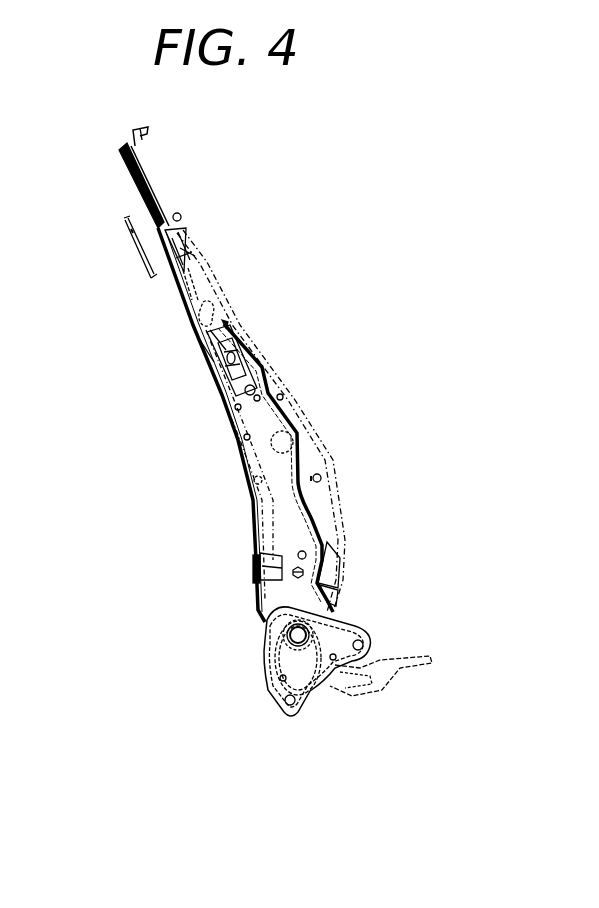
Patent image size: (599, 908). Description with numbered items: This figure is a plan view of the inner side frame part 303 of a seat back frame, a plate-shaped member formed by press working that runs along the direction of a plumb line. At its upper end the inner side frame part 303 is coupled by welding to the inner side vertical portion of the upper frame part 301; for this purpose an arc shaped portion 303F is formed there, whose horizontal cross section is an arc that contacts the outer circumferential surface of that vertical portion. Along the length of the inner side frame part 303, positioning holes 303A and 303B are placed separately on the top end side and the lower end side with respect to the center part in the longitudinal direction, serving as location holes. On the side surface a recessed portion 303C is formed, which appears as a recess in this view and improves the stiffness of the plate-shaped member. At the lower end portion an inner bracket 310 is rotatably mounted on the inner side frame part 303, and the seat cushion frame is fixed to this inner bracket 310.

The upper frame part 301 is at (160, 185).
The inner side frame part 303 is at (320, 432).
The positioning hole 303A is at (247, 393).
The positioning hole 303B is at (298, 556).
The recessed portion 303C is at (297, 512).
The arc shaped portion 303F is at (190, 247).
The inner bracket 310 is at (270, 692).